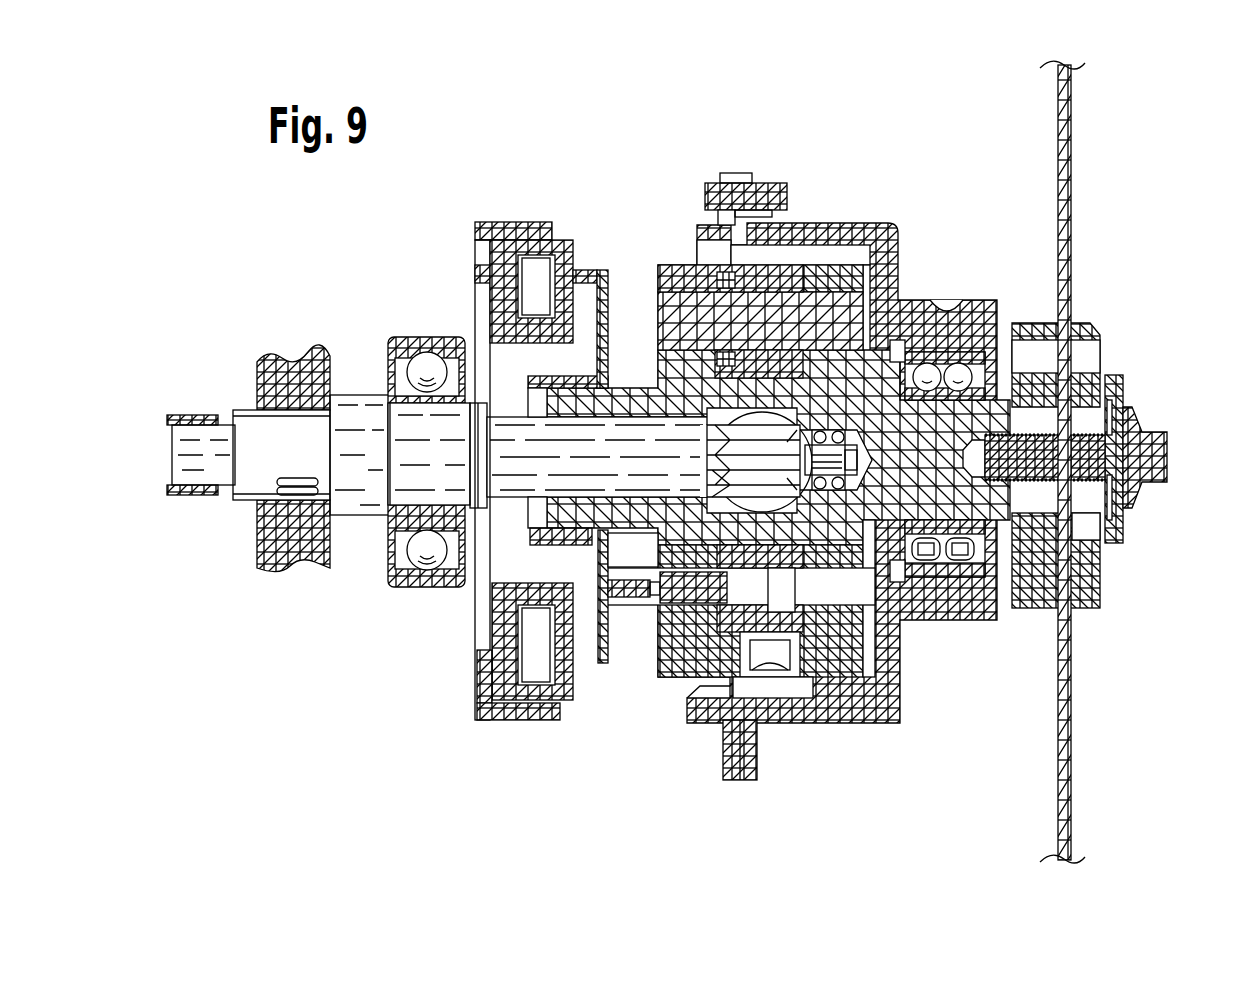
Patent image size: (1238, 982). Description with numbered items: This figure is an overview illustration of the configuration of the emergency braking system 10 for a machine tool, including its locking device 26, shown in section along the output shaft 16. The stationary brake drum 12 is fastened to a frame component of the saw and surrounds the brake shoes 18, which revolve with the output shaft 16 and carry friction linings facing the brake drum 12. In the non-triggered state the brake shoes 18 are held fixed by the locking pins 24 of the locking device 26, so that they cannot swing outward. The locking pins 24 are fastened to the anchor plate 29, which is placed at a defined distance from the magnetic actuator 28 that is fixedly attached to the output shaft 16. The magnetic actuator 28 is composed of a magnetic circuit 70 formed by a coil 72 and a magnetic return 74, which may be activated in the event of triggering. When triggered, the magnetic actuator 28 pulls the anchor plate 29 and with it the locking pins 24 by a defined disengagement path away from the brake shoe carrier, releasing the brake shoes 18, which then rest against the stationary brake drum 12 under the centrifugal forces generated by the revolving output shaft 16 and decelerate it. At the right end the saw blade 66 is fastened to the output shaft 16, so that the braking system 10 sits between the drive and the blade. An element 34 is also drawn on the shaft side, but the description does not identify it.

The emergency braking system 10 is at (915, 752).
The brake drum 12 is at (848, 236).
The output shaft 16 is at (1080, 422).
The brake shoe 18 is at (748, 283).
The locking pin 24 is at (630, 600).
The locking device 26 is at (537, 727).
The magnetic actuator 28 is at (460, 682).
The anchor plate 29 is at (610, 652).
The shaft 34 is at (367, 480).
The saw blade 66 is at (1032, 128).
The magnetic circuit 70 is at (460, 275).
The coil 72 is at (535, 272).
The magnetic return 74 is at (555, 702).